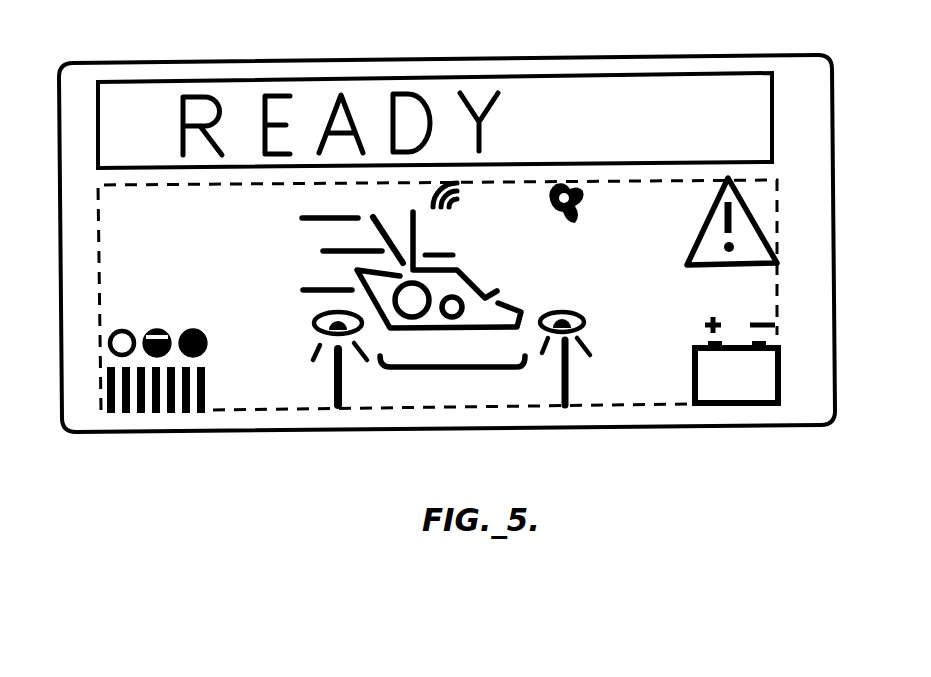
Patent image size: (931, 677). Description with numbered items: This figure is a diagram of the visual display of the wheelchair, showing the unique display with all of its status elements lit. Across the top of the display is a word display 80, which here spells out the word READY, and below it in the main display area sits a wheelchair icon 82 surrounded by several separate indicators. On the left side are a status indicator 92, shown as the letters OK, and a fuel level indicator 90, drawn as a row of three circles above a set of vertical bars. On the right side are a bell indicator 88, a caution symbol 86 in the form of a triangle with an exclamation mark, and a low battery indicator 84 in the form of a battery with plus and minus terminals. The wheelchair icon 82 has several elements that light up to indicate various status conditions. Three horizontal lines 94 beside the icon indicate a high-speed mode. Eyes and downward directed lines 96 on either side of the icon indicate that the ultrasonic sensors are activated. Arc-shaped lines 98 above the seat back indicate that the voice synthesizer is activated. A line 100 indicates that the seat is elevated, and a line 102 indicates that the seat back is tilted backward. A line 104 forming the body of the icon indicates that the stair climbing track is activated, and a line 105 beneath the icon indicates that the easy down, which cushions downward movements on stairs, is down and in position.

The word display 80 is at (634, 99).
The wheelchair icon 82 is at (480, 292).
The low battery indicator 84 is at (738, 420).
The caution symbol 86 is at (763, 193).
The bell indicator 88 is at (593, 192).
The fuel level indicator 90 is at (157, 438).
The status indicator 92 is at (118, 214).
The lines 94 is at (303, 222).
The eyes and downward directed lines 96 is at (322, 362).
The lines 98 is at (459, 203).
The line 100 is at (457, 251).
The line 102 is at (387, 199).
The line 104 is at (442, 330).
The line 105 is at (445, 370).